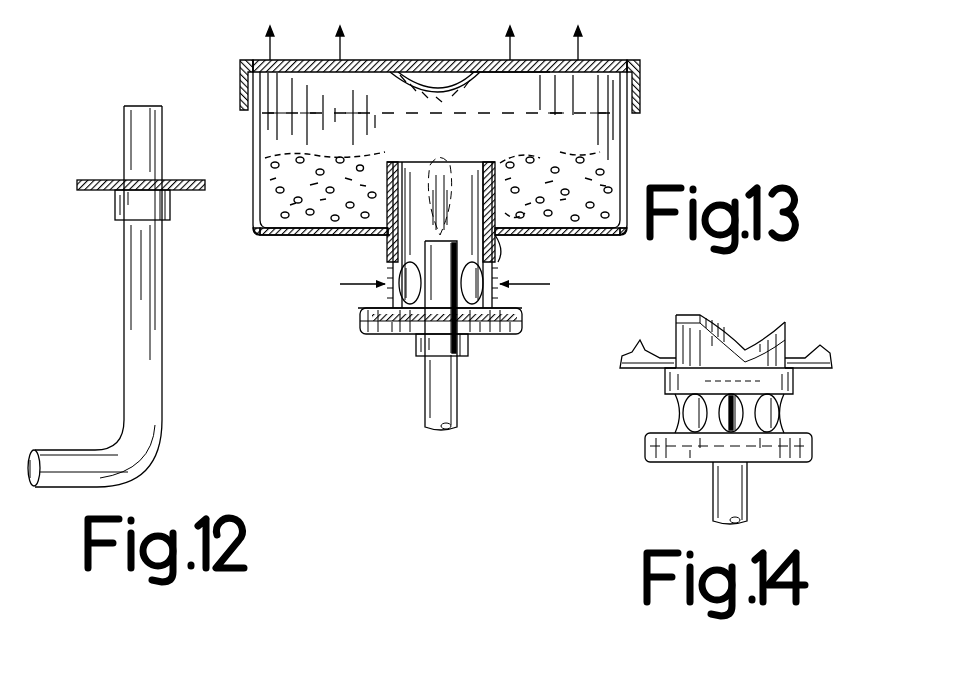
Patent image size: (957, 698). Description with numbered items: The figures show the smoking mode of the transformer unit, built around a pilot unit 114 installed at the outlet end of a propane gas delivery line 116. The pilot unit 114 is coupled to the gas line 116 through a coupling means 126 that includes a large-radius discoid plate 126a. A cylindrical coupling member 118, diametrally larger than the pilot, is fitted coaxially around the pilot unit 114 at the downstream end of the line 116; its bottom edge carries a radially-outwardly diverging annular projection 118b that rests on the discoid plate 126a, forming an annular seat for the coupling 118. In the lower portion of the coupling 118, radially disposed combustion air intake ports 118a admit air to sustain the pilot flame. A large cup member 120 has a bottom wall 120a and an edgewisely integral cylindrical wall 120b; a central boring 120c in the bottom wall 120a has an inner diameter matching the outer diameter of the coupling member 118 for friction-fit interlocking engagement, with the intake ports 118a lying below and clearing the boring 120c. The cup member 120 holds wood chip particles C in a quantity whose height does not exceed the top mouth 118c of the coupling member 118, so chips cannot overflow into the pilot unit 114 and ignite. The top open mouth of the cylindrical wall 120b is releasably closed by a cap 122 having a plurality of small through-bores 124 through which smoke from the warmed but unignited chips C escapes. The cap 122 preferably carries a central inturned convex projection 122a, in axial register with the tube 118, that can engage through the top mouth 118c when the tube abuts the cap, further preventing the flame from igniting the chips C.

In FIG. 12, the pilot unit 114 is at (140, 160).
In FIG. 13, the pilot unit 114 is at (442, 285).
In FIG. 12, the propane gas delivery line 116 is at (68, 460).
In FIG. 13, the propane gas delivery line 116 is at (435, 413).
In FIG. 14, the propane gas delivery line 116 is at (715, 488).
In FIG. 13, the cylindrical coupling member 118 is at (372, 248).
In FIG. 14, the cylindrical coupling member 118 is at (770, 325).
In FIG. 13, the combustion air intake ports 118a is at (368, 310).
In FIG. 14, the combustion air intake ports 118a is at (698, 415).
In FIG. 13, the annular projection 118b is at (362, 322).
In FIG. 13, the top mouth 118c is at (412, 162).
In FIG. 13, the cup member 120 is at (625, 150).
In FIG. 13, the bottom wall 120a is at (290, 232).
In FIG. 13, the cylindrical wall 120b is at (630, 220).
In FIG. 13, the boring 120c is at (520, 262).
In FIG. 13, the cap 122 is at (643, 40).
In FIG. 13, the central inturned convex projection 122a is at (440, 72).
In FIG. 13, the through-bores 124 is at (575, 60).
In FIG. 12, the coupling means 126 is at (105, 214).
In FIG. 13, the coupling means 126 is at (442, 345).
In FIG. 12, the discoid plate 126a is at (80, 185).
In FIG. 13, the discoid plate 126a is at (457, 355).
In FIG. 14, the discoid plate 126a is at (728, 447).
In FIG. 13, the wood chip particles C is at (610, 176).